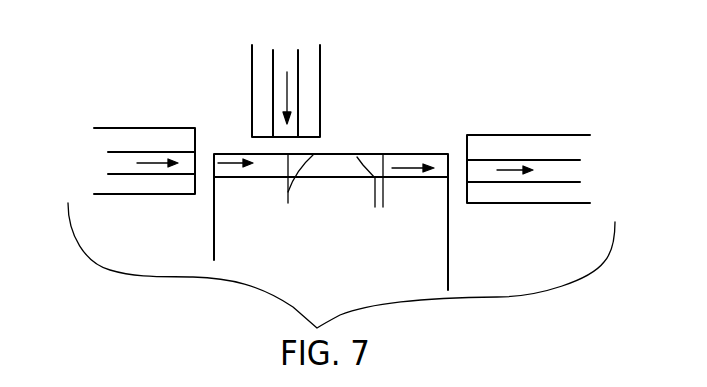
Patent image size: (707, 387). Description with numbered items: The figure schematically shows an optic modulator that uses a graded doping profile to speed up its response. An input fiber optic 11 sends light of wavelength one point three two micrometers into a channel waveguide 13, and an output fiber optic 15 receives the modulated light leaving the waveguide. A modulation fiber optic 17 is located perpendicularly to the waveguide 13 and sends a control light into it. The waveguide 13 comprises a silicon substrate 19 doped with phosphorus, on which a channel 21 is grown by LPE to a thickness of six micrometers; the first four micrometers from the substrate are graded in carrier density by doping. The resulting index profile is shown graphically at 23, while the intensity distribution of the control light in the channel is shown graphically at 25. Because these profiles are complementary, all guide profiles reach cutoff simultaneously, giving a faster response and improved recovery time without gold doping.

The input fiber optic 11 is at (123, 142).
The channel waveguide 13 is at (415, 150).
The output fiber optic 15 is at (545, 152).
The modulation fiber optic 17 is at (313, 92).
The silicon substrate 19 is at (440, 221).
The channel 21 is at (245, 155).
The index profile 23 is at (373, 203).
The intensity distribution 25 is at (287, 192).